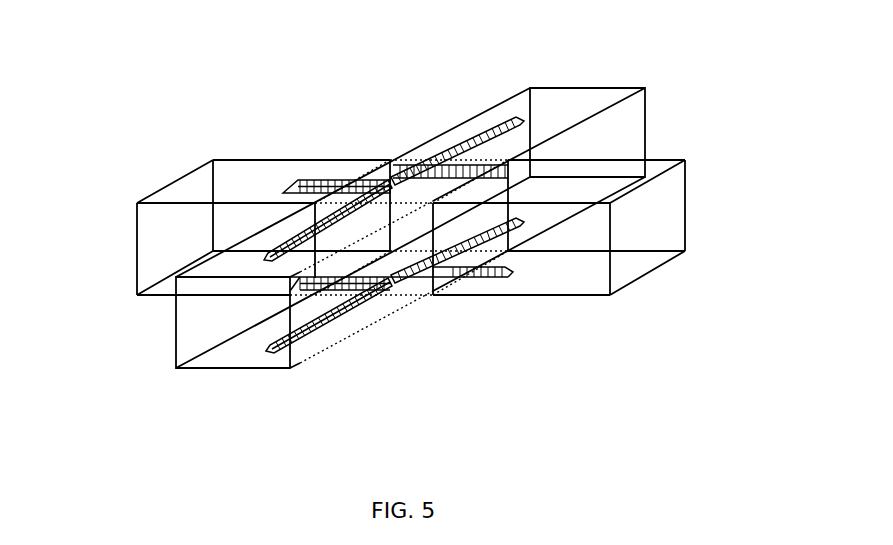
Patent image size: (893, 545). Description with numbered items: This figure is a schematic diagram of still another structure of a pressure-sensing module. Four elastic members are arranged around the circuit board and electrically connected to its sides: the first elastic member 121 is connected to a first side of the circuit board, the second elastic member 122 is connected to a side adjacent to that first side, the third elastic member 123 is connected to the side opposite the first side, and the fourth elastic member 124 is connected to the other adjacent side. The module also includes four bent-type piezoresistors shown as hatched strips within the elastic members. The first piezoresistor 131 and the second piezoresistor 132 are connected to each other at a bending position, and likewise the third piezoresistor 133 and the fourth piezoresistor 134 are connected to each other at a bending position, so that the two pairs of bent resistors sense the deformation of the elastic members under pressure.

The first elastic member 121 is at (562, 108).
The second elastic member 122 is at (658, 228).
The third elastic member 123 is at (240, 350).
The fourth elastic member 124 is at (148, 248).
The first piezoresistor 131 is at (457, 143).
The second piezoresistor 132 is at (338, 183).
The third piezoresistor 133 is at (480, 278).
The fourth piezoresistor 134 is at (320, 327).